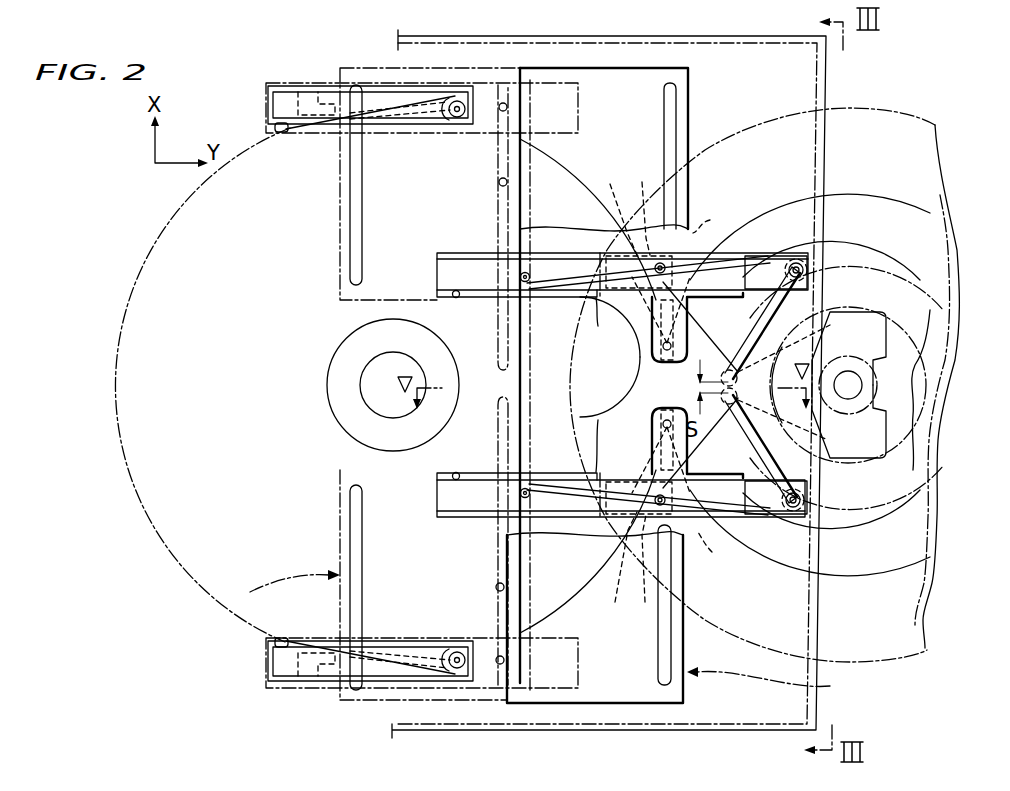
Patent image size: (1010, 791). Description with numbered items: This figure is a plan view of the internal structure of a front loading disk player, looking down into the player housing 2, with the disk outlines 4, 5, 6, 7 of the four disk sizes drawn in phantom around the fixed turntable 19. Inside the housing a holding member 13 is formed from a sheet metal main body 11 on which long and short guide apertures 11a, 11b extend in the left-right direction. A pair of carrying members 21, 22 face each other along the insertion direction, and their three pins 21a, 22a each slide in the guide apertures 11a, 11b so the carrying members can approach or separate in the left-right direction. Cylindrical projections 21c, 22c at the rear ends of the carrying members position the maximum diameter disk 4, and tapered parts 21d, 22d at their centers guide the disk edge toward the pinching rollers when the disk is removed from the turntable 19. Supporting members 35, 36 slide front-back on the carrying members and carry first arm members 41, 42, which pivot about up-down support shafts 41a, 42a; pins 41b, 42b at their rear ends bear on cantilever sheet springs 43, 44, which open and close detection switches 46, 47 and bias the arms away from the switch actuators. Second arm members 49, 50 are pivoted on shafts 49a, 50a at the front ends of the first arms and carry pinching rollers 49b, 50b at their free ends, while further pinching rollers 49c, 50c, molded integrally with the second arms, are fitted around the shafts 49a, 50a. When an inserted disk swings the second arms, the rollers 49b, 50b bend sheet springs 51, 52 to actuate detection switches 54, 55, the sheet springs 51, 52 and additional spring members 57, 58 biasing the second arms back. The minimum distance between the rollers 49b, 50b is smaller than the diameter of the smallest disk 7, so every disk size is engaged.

The player housing 2 is at (831, 92).
The disk 4 is at (940, 190).
The disk 5 is at (950, 258).
The disk 6 is at (958, 330).
The disk 7 is at (948, 364).
The main body 11 is at (683, 692).
The long guide aperture 11a is at (674, 130).
The short guide aperture 11b is at (462, 387).
The holding member 13 is at (250, 592).
The turntable 19 is at (328, 395).
The carrying member 21 is at (268, 128).
The pins 21a is at (526, 295).
The cylindrical projection 21c is at (283, 135).
The tapered part 21d is at (607, 333).
The carrying member 22 is at (437, 498).
The pins 22a is at (664, 416).
The cylindrical projection 22c is at (283, 637).
The tapered part 22d is at (609, 406).
The supporting member 35 is at (268, 92).
The supporting member 36 is at (267, 685).
The first arm member 41 is at (412, 118).
The pivotal support shaft 41a is at (685, 324).
The pin 41b is at (718, 217).
The first arm member 42 is at (413, 640).
The pivotal support shaft 42a is at (752, 478).
The pin 42b is at (718, 552).
The sheet spring 43 is at (614, 207).
The sheet spring 44 is at (613, 568).
The detection switch 46 is at (603, 323).
The detection switch 47 is at (588, 435).
The second arm member 49 is at (390, 104).
The pivotal support shaft 49a is at (806, 266).
The pinching roller 49b is at (820, 356).
The pinching roller 49c is at (814, 279).
The second arm member 50 is at (724, 410).
The pivotal support shaft 50a is at (804, 506).
The pinching roller 50b is at (820, 418).
The pinching roller 50c is at (810, 496).
The sheet spring 51 is at (662, 346).
The sheet spring 52 is at (662, 424).
The detection switch 54 is at (643, 206).
The detection switch 55 is at (643, 569).
The spring member 57 is at (777, 280).
The spring member 58 is at (810, 533).